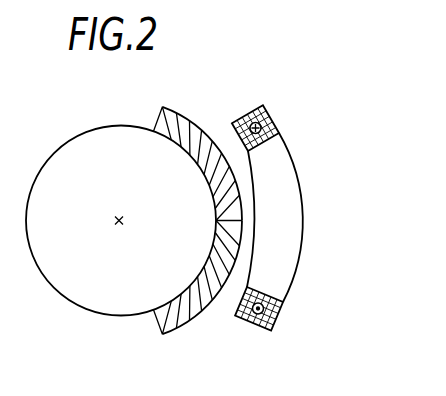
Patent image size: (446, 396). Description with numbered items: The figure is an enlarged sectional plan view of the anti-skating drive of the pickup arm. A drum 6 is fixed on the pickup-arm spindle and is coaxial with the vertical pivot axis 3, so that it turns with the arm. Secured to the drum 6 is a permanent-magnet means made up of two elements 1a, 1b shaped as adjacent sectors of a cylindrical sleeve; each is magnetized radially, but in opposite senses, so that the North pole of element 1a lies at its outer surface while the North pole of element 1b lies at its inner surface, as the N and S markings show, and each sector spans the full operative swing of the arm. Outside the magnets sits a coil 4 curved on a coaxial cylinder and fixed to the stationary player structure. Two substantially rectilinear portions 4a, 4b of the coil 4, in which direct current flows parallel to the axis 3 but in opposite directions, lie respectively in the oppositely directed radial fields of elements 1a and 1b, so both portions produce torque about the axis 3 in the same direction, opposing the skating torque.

The drum 6 is at (64, 142).
The vertical pivot axis 3 is at (115, 220).
The permanent-magnet element 1a is at (157, 120).
The permanent-magnet element 1b is at (156, 327).
The coil 4 is at (301, 195).
The coil portion 4a is at (276, 119).
The coil portion 4b is at (279, 320).